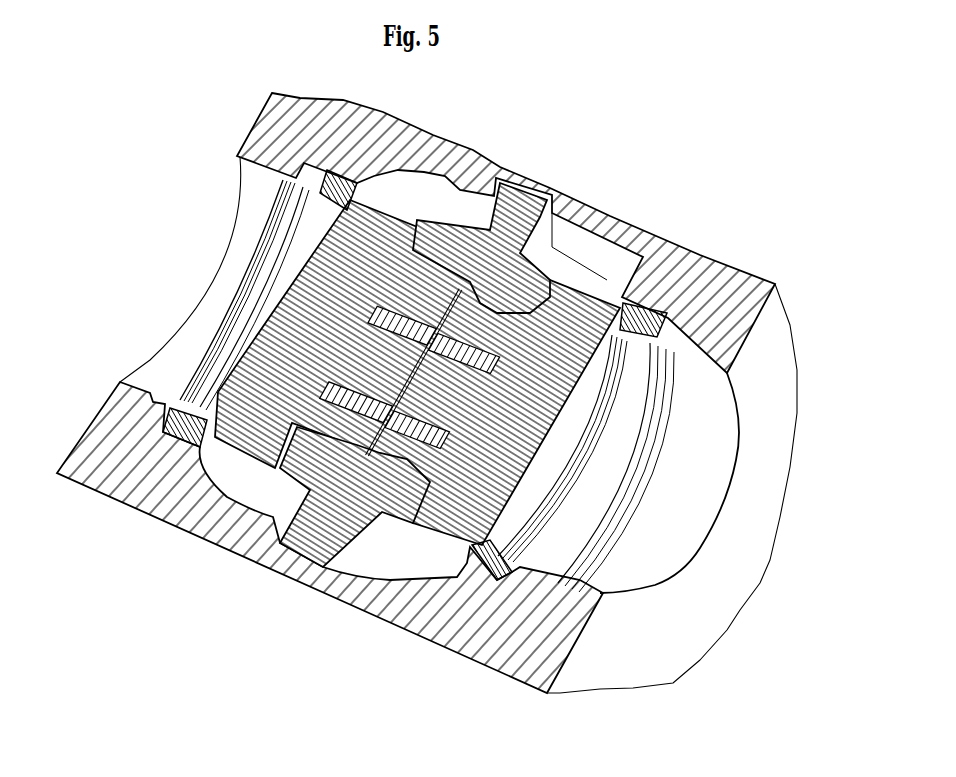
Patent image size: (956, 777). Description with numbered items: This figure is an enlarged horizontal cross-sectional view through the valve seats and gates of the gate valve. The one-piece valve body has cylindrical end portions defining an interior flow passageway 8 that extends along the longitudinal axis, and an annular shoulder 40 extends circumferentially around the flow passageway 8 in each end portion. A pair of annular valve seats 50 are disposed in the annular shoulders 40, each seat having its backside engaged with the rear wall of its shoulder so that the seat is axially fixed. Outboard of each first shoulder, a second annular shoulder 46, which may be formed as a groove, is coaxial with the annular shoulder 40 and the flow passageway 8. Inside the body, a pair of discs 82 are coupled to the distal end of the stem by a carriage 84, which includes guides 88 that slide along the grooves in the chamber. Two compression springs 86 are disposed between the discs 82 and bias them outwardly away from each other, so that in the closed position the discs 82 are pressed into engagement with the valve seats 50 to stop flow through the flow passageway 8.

The interior flow passageway 8 is at (240, 238).
The annular shoulder 40 is at (267, 313).
The second annular shoulder 46 is at (643, 467).
The annular valve seat 50 is at (132, 510).
The disc 82 is at (528, 366).
The carriage 84 is at (556, 190).
The compression spring 86 is at (445, 548).
The guide 88 is at (518, 190).